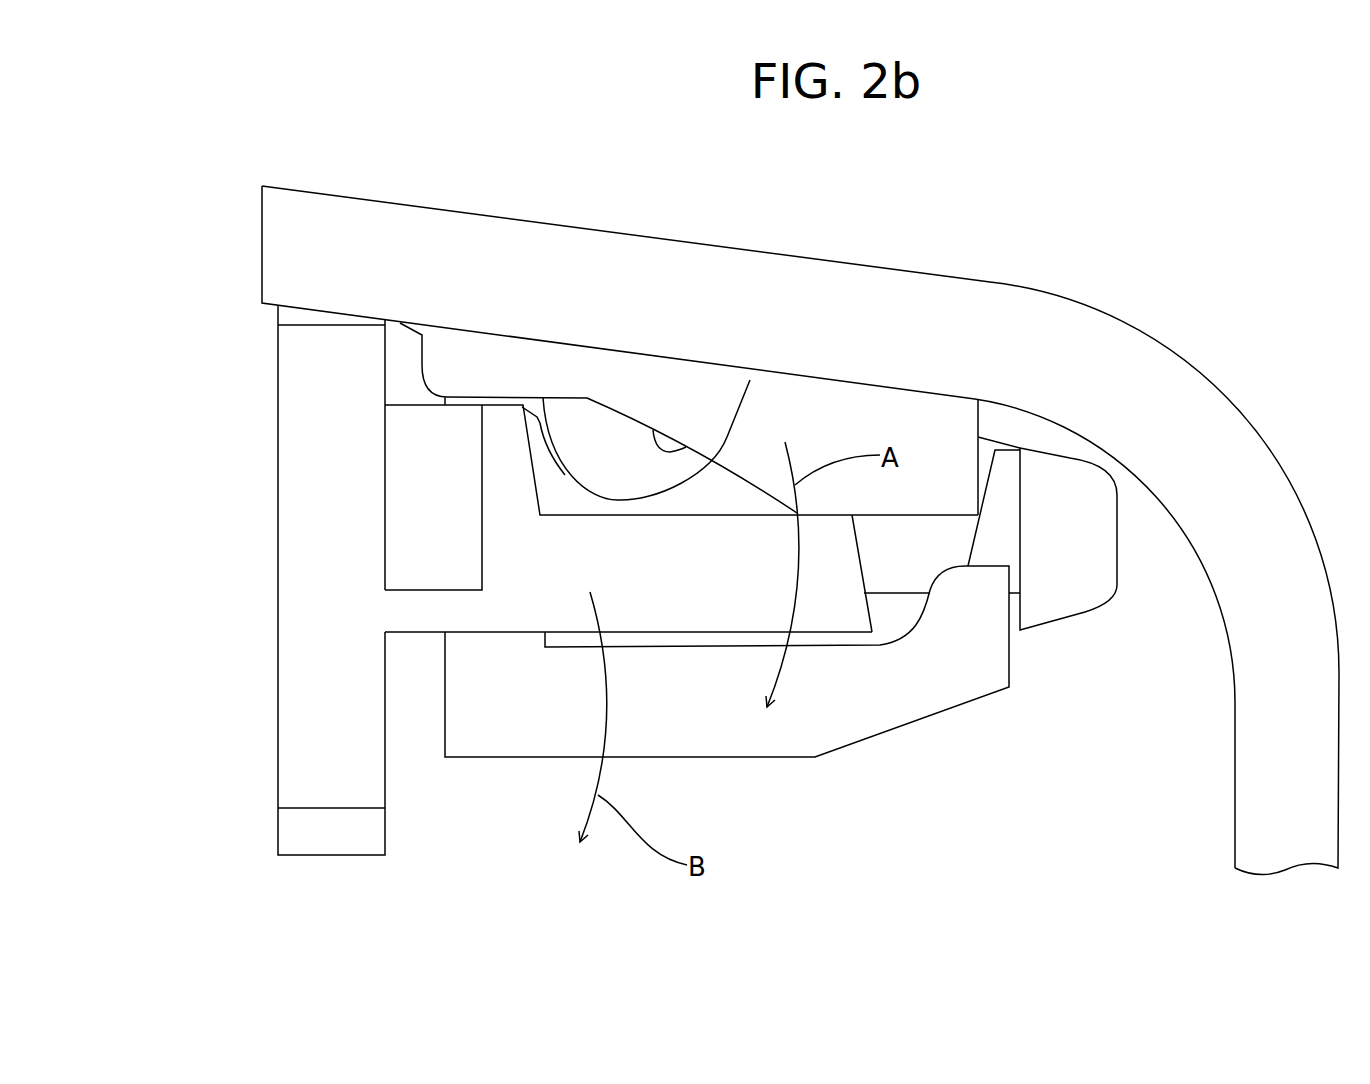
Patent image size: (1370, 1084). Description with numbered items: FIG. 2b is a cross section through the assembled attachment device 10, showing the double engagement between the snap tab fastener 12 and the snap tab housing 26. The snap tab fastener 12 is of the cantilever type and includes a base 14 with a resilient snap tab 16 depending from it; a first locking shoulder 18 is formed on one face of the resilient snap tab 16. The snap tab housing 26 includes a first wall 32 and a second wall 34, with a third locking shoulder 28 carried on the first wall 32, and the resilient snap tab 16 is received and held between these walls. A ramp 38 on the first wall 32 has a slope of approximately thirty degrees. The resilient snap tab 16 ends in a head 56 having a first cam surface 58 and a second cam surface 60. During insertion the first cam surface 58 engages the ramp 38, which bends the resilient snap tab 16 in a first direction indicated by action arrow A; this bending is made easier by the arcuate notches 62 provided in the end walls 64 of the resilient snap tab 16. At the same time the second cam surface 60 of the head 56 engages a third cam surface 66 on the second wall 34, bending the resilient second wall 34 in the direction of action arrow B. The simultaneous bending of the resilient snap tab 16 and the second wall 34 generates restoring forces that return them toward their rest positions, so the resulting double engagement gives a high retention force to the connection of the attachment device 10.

The attachment device 10 is at (250, 152).
The snap tab fastener 12 is at (365, 880).
The base 14 is at (325, 472).
The resilient snap tab 16 is at (667, 577).
The first locking shoulder 18 is at (990, 467).
The snap tab housing 26 is at (1050, 272).
The third locking shoulder 28 is at (980, 502).
The first wall 32 is at (738, 262).
The second wall 34 is at (712, 725).
The ramp 38 is at (727, 437).
The head 56 is at (1117, 543).
The first cam surface 58 is at (1060, 458).
The second cam surface 60 is at (1083, 613).
The arcuate notches 62 is at (617, 500).
The end walls 64 is at (550, 483).
The third cam surface 66 is at (937, 584).